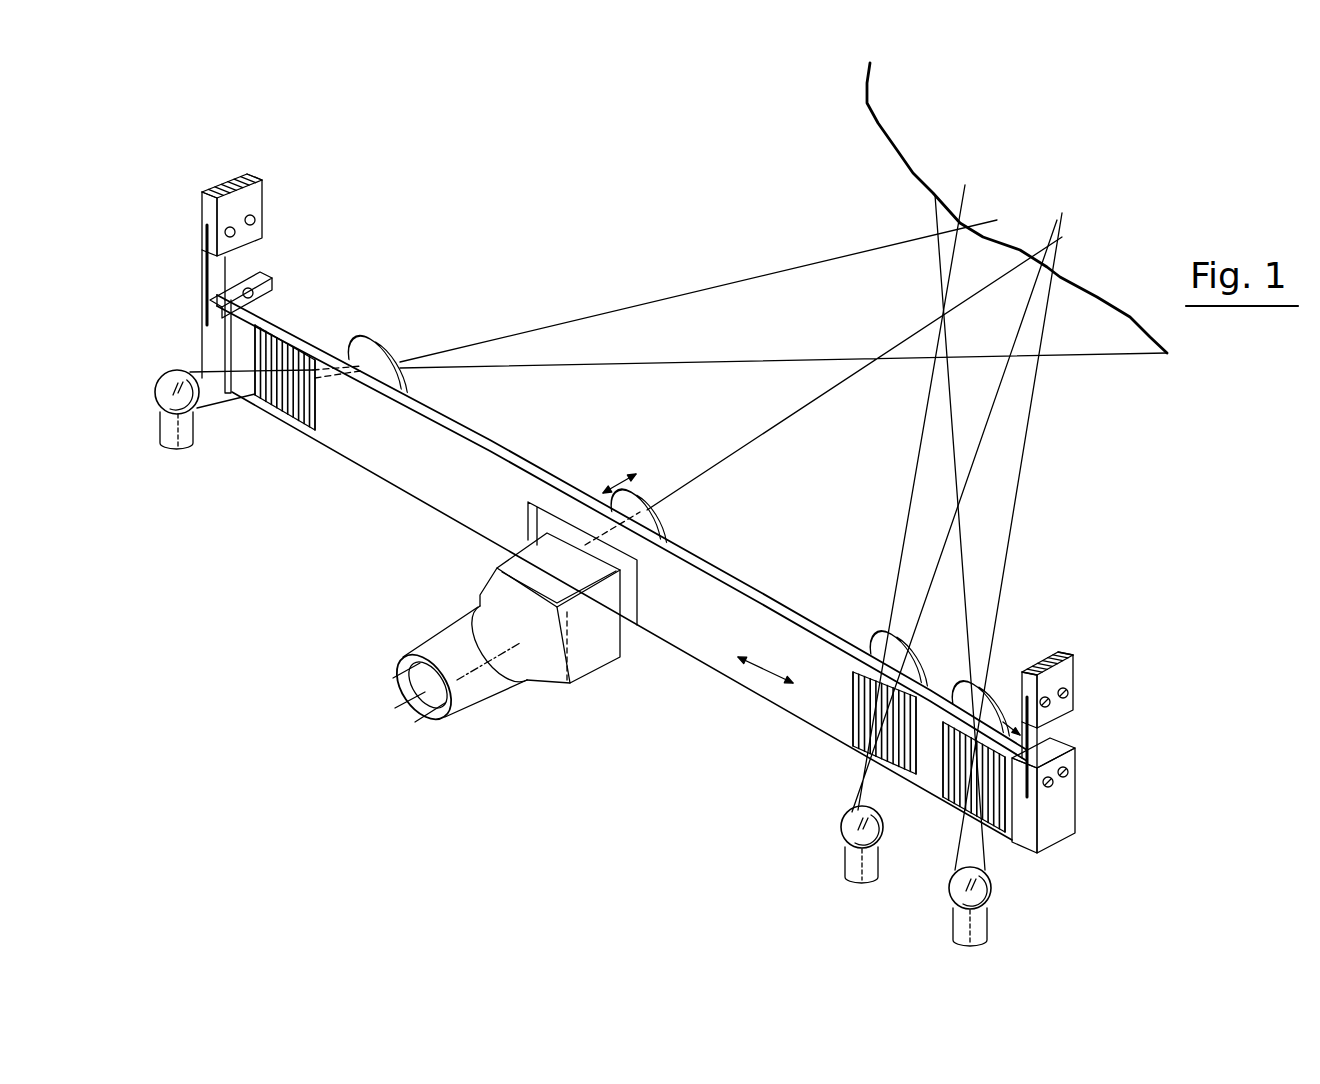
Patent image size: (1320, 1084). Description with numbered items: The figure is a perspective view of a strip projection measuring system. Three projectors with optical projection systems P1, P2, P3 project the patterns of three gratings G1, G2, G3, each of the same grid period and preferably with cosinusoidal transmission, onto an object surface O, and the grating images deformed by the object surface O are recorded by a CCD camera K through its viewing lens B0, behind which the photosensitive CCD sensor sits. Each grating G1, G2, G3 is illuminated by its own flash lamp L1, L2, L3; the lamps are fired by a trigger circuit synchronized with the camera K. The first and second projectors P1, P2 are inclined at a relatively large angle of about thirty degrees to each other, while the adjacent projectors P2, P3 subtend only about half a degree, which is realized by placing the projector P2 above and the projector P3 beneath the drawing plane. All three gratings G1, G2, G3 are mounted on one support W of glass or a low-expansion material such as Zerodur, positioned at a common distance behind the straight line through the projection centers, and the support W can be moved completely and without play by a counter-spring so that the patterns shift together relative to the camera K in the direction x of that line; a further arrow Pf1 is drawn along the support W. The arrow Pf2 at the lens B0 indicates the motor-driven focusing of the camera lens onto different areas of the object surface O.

The support W is at (382, 453).
The first grating G1 is at (290, 420).
The second grating G2 is at (853, 723).
The third grating G3 is at (945, 800).
The first projector P1 is at (376, 338).
The second projector P2 is at (885, 640).
The third projector P3 is at (997, 680).
The viewing lens B0 is at (665, 512).
The first flash lamp L1 is at (156, 398).
The second flash lamp L2 is at (850, 827).
The third flash lamp L3 is at (993, 880).
The object surface O is at (896, 152).
The camera K is at (598, 652).
The first displacement direction arrow Pf1 is at (772, 658).
The focusing arrow Pf2 is at (614, 485).
The x-direction x is at (1011, 720).